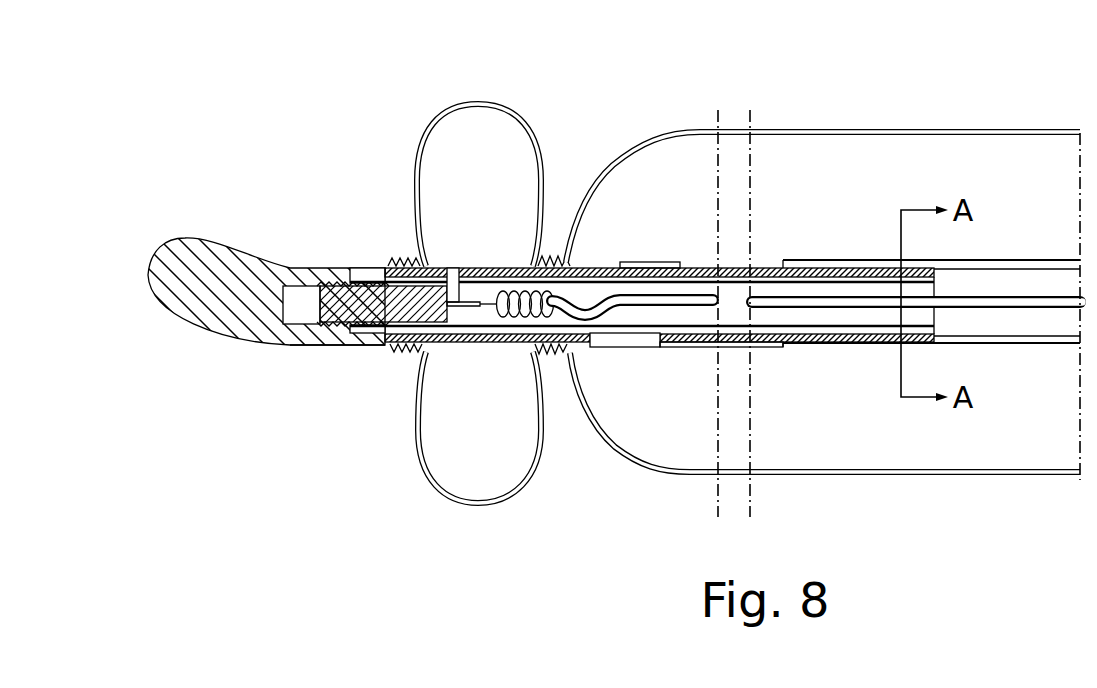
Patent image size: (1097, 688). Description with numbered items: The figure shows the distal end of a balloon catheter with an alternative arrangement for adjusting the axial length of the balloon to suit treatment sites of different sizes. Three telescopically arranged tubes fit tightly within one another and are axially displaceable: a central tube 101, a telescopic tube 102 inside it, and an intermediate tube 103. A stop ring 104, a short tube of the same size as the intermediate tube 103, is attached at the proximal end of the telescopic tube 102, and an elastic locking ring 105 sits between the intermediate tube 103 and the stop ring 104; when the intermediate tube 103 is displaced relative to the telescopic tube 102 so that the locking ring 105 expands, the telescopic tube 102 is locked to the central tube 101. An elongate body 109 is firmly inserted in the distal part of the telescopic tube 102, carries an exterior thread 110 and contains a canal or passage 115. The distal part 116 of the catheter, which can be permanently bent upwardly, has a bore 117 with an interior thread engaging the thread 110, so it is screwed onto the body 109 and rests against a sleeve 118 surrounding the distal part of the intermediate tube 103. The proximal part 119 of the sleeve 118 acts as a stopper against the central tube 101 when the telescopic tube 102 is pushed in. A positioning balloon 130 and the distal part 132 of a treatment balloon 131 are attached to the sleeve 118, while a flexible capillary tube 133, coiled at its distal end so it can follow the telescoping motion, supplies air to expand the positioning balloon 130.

The central tube 101 is at (990, 260).
The telescopic tube 102 is at (823, 262).
The intermediate tube 103 is at (767, 263).
The stop ring 104 is at (882, 262).
The locking ring 105 is at (863, 344).
The elongate body 109 is at (354, 348).
The exterior thread 110 is at (337, 346).
The canal or passage 115 is at (367, 283).
The distal part of the catheter 116 is at (172, 300).
The bore 117 is at (298, 286).
The sleeve 118 is at (383, 265).
The proximal part of the sleeve 119 is at (692, 266).
The positioning balloon 130 is at (478, 103).
The treatment balloon 131 is at (608, 167).
The distal part of the treatment balloon 132 is at (547, 256).
The flexible capillary tube 133 is at (597, 305).